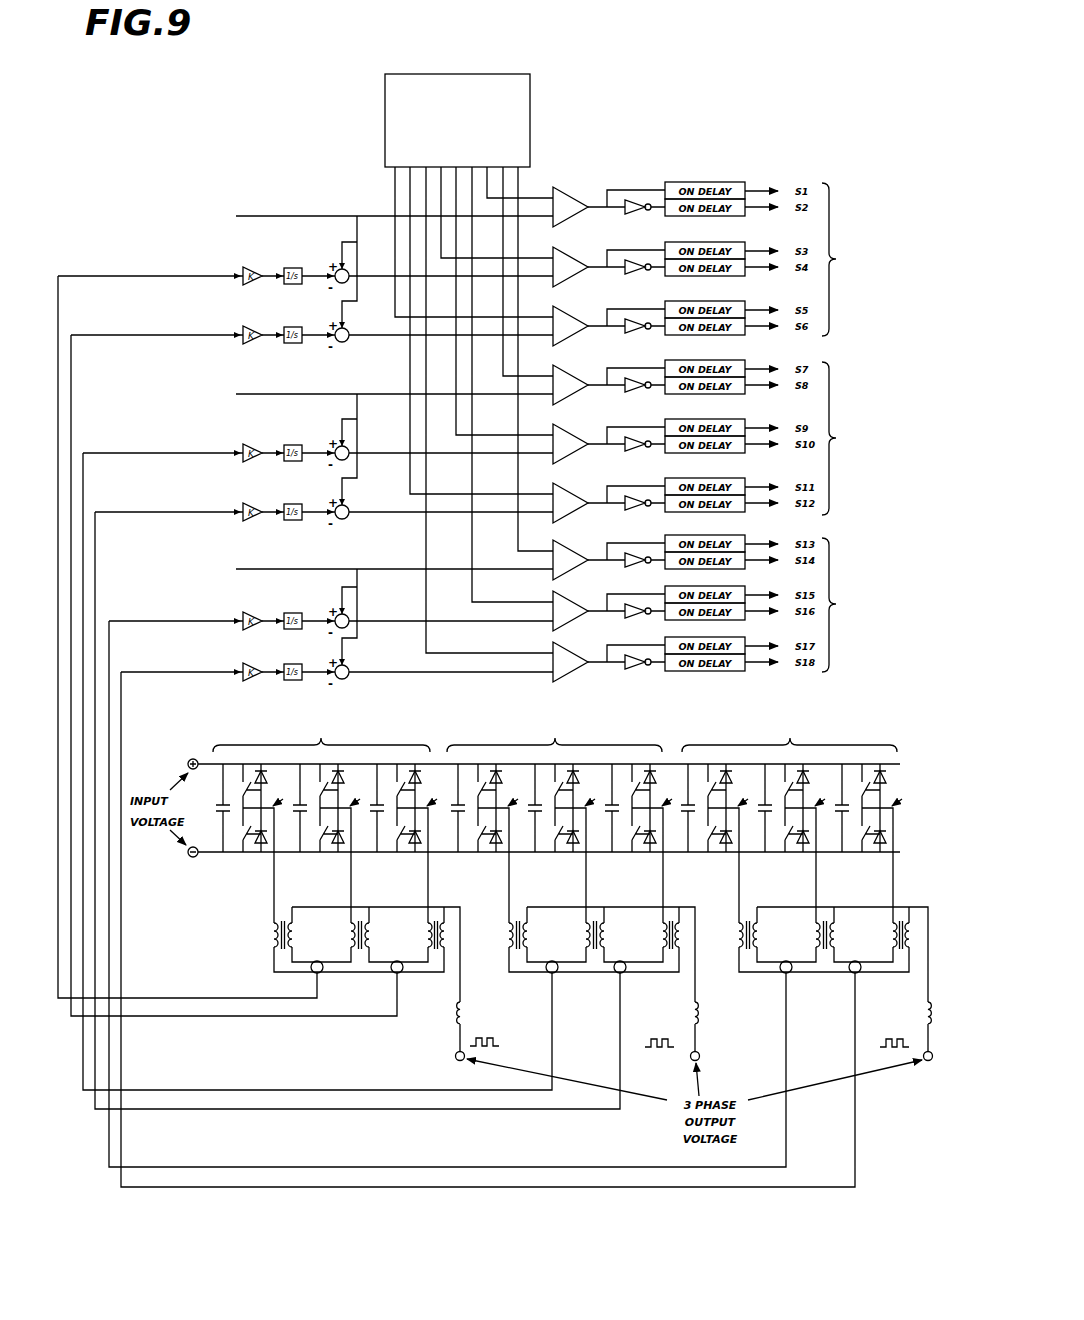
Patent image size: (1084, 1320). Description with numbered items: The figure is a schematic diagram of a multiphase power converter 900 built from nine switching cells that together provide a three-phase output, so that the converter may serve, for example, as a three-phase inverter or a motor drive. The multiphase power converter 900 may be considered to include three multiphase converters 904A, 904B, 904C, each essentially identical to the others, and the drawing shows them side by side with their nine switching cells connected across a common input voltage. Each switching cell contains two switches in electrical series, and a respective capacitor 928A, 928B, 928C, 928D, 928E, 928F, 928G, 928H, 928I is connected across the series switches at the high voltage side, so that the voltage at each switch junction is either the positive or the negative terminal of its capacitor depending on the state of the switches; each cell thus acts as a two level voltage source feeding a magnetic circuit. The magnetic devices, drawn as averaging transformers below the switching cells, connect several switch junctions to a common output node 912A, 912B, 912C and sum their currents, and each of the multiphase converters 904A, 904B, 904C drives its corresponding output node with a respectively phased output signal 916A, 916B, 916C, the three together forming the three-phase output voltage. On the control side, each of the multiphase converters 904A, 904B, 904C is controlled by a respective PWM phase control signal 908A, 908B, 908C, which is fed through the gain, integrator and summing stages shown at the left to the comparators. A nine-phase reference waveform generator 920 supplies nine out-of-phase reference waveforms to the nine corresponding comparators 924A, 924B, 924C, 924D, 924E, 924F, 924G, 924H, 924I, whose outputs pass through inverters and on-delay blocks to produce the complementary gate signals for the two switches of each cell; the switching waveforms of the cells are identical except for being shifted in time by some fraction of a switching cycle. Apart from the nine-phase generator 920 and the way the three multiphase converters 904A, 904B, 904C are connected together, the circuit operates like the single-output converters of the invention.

The multiphase power converter 900 is at (772, 142).
The multiphase converter 904A is at (559, 553).
The multiphase converter 904B is at (676, 642).
The multiphase converter 904C is at (796, 730).
The PWM phase control signal 908A is at (295, 208).
The PWM phase control signal 908B is at (292, 385).
The PWM phase control signal 908C is at (294, 563).
The output node 912A is at (455, 1056).
The output node 912B is at (700, 1054).
The output node 912C is at (925, 1062).
The phased output signal 916A is at (492, 1038).
The phased output signal 916B is at (652, 1038).
The phased output signal 916C is at (883, 1040).
The nine-phase reference waveform generator 920 is at (500, 74).
The comparator 924A is at (582, 198).
The comparator 924B is at (576, 260).
The comparator 924C is at (576, 318).
The comparator 924D is at (576, 378).
The comparator 924E is at (572, 436).
The comparator 924F is at (572, 496).
The comparator 924G is at (574, 554).
The comparator 924H is at (570, 608).
The comparator 924I is at (576, 675).
The capacitor 928A is at (227, 820).
The capacitor 928B is at (304, 820).
The capacitor 928C is at (381, 820).
The capacitor 928D is at (462, 820).
The capacitor 928E is at (539, 820).
The capacitor 928F is at (616, 820).
The capacitor 928G is at (692, 820).
The capacitor 928H is at (769, 820).
The capacitor 928I is at (846, 820).